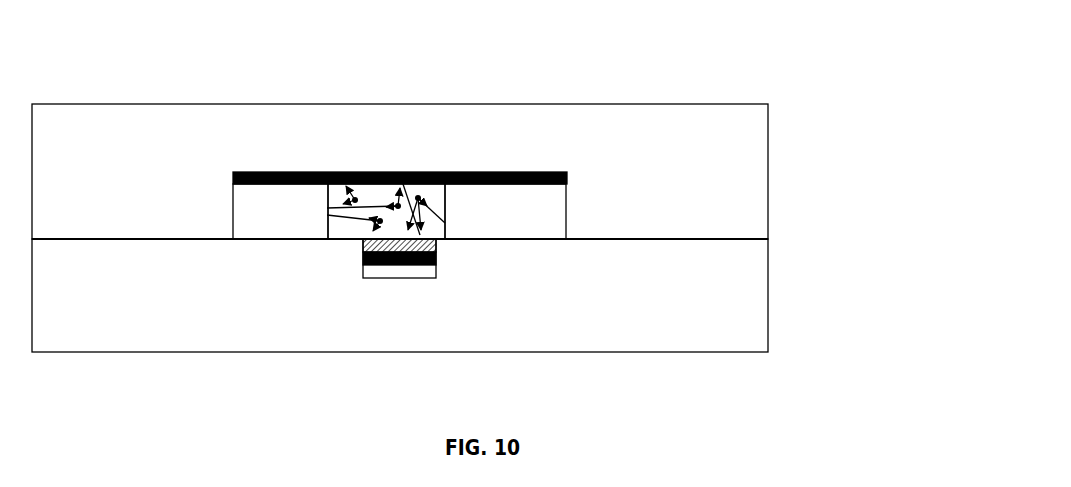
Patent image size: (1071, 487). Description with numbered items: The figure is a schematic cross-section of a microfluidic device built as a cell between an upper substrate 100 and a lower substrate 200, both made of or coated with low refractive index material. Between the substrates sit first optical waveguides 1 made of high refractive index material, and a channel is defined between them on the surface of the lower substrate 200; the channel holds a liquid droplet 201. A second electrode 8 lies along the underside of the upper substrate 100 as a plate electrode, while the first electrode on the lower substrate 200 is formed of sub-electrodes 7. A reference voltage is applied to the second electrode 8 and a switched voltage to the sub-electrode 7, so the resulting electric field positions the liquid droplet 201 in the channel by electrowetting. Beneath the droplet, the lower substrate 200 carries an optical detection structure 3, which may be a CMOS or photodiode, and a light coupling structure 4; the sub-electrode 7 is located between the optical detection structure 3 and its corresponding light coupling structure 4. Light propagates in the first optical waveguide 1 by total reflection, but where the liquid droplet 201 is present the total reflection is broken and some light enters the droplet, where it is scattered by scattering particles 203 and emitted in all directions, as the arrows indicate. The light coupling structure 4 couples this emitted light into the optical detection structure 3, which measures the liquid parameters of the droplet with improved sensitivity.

The first optical waveguide 1 is at (278, 199).
The optical detection structure 3 is at (383, 268).
The light coupling structure 4 is at (437, 253).
The sub-electrode 7 is at (425, 260).
The second electrode 8 is at (528, 172).
The upper substrate 100 is at (733, 173).
The lower substrate 200 is at (738, 298).
The liquid droplet 201 is at (437, 185).
The scattering particles 203 is at (357, 198).